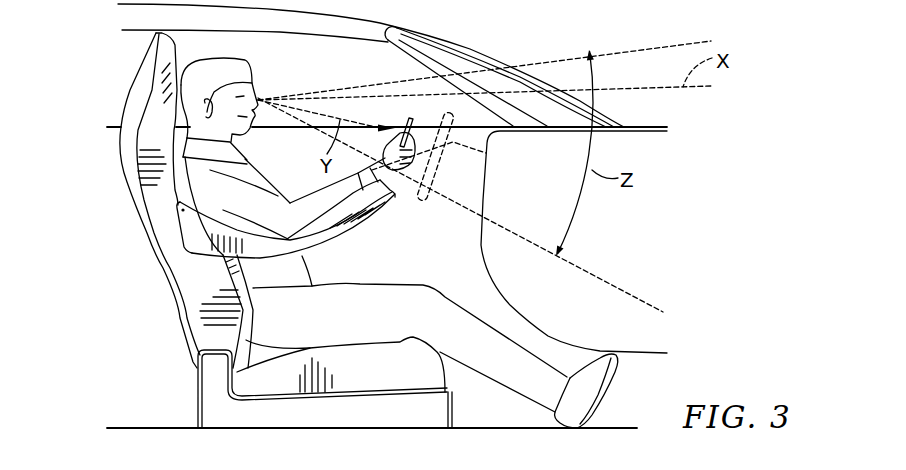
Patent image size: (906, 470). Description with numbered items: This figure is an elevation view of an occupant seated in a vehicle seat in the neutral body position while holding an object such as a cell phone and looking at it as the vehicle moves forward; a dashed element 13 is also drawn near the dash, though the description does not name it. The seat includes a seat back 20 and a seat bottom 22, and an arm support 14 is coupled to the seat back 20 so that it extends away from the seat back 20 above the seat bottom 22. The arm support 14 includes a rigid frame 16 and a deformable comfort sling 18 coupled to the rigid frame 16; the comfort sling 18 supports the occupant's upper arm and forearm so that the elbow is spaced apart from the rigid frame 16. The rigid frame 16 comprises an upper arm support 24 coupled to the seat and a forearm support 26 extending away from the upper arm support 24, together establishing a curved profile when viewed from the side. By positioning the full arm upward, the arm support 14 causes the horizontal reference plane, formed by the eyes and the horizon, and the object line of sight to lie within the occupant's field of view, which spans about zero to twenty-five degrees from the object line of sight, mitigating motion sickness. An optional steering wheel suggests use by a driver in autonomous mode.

The display 13 is at (456, 202).
The arm support 14 is at (158, 210).
The rigid frame 16 is at (166, 228).
The comfort sling 18 is at (396, 205).
The seat back 20 is at (133, 138).
The seat bottom 22 is at (430, 375).
The upper arm support 24 is at (197, 245).
The forearm support 26 is at (329, 238).